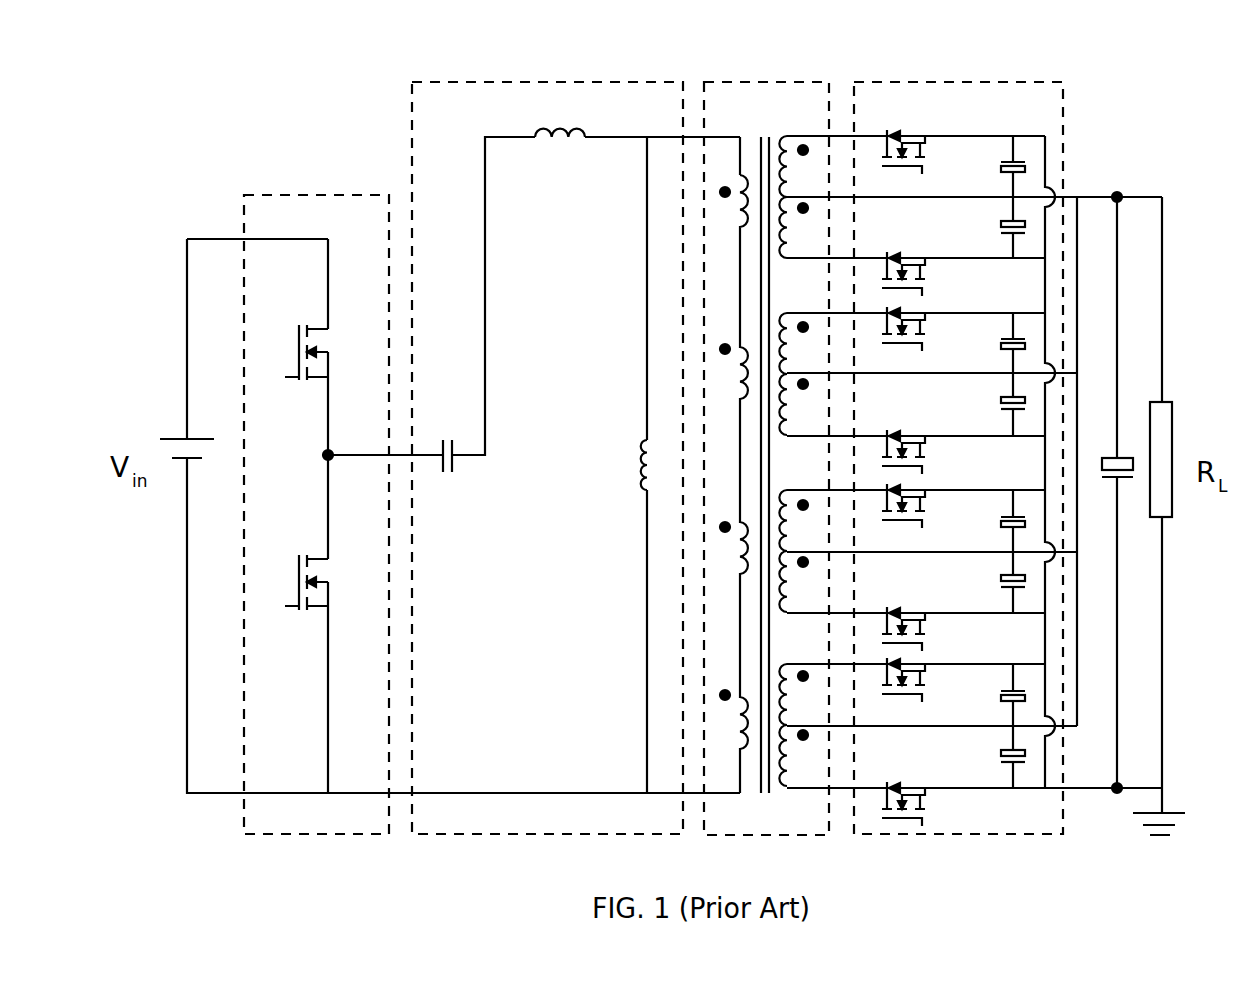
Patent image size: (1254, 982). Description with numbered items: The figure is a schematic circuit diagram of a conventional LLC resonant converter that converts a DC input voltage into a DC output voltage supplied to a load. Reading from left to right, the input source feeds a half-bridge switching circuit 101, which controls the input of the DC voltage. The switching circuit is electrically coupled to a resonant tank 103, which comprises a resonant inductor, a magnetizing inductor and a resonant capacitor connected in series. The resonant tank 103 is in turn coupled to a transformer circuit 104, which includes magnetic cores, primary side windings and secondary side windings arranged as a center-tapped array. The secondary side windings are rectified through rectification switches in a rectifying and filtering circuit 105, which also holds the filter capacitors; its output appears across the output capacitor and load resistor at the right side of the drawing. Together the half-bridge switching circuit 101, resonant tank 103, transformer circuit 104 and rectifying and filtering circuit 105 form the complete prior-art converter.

The half-bridge switching circuit 101 is at (303, 196).
The resonant tank 103 is at (539, 82).
The transformer circuit 104 is at (755, 82).
The rectifying and filtering circuit 105 is at (954, 82).